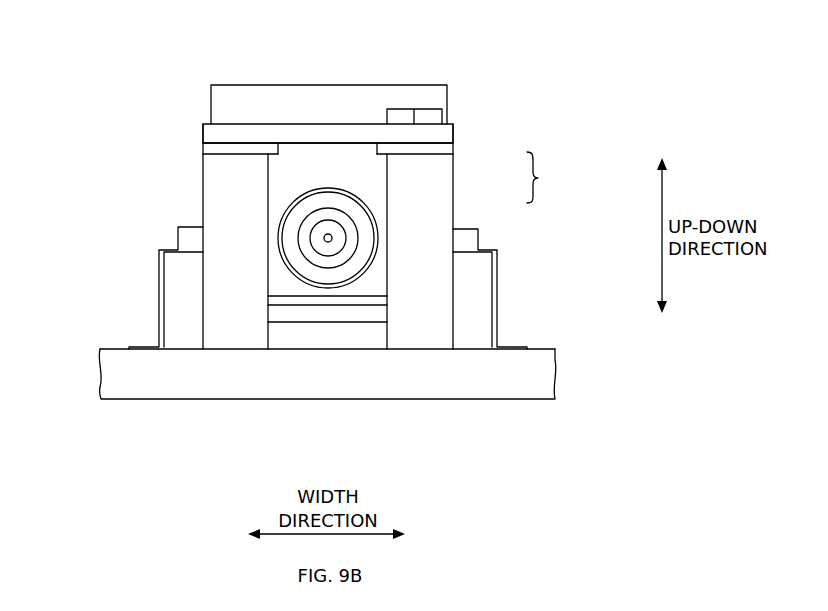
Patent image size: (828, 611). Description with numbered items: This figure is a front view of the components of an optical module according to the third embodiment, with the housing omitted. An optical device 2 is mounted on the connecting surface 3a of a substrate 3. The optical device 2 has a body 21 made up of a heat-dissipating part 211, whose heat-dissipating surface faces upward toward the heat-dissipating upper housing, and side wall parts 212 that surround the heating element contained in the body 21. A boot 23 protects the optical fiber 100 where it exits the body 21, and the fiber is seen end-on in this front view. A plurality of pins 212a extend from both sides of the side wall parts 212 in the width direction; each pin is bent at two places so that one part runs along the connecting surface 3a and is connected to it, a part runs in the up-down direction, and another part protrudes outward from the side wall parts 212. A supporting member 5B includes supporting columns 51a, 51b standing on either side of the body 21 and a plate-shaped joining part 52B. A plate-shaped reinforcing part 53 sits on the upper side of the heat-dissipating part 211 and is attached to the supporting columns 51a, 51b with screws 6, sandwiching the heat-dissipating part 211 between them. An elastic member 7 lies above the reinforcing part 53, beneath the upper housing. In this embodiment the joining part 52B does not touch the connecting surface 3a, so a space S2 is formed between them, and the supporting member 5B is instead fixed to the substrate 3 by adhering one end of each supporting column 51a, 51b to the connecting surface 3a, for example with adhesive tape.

The elastic member 7 is at (324, 100).
The screws 6 is at (428, 112).
The reinforcing part 53 is at (204, 130).
The heat-dissipating part 211 is at (447, 148).
The side wall parts 212 is at (370, 182).
The body 21 is at (545, 177).
The optical device 2 is at (480, 139).
The supporting column 51b is at (223, 180).
The supporting column 51a is at (423, 213).
The supporting member 5B is at (157, 212).
The optical fiber 100 is at (328, 235).
The joining part 52B is at (323, 316).
The boot 23 is at (360, 296).
The space S2 is at (282, 334).
The pins 212a is at (160, 288).
The connecting surface 3a is at (538, 347).
The substrate 3 is at (447, 387).